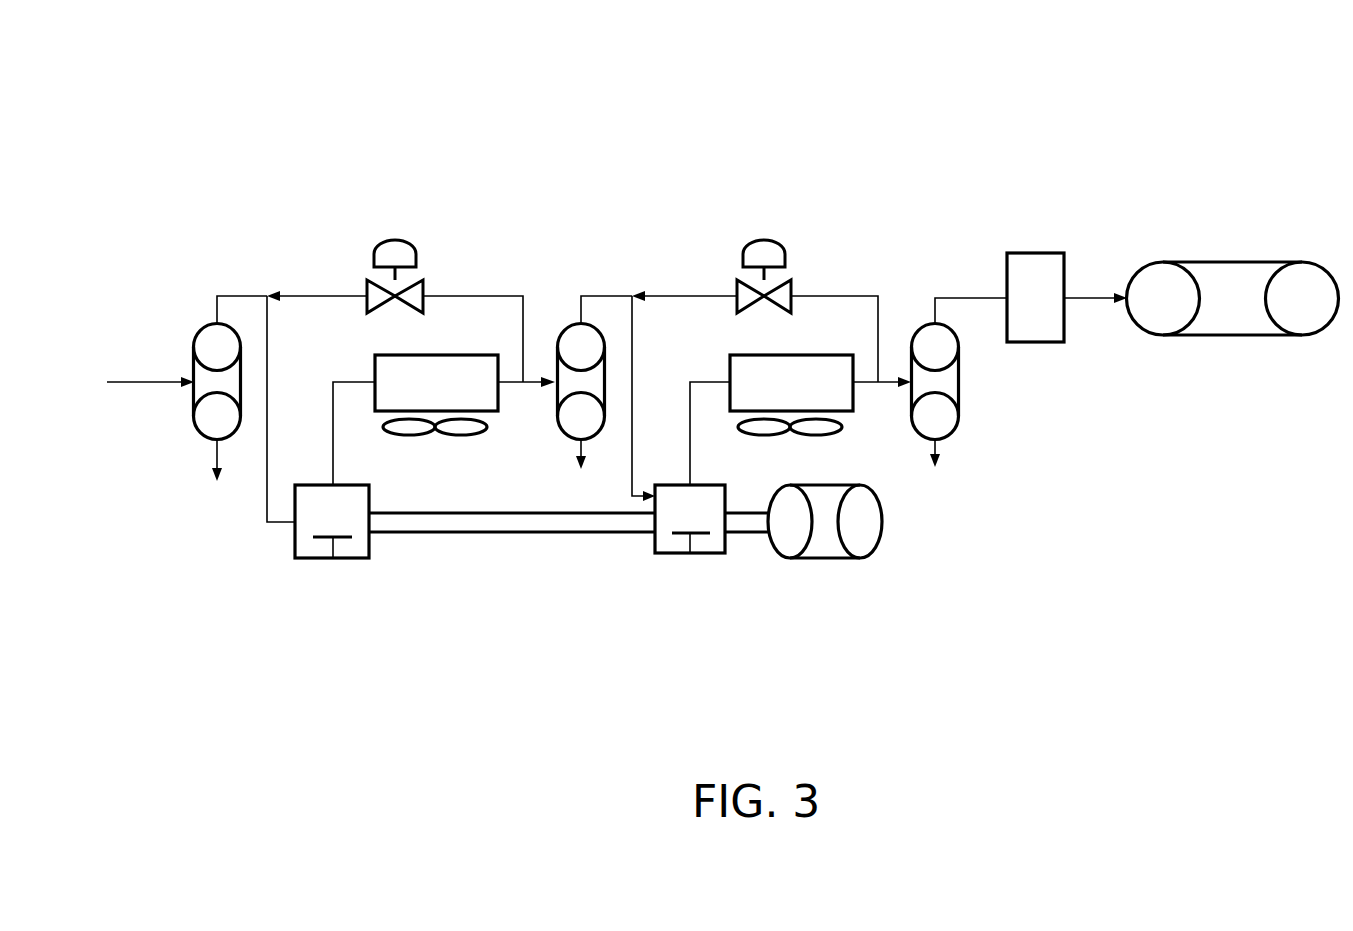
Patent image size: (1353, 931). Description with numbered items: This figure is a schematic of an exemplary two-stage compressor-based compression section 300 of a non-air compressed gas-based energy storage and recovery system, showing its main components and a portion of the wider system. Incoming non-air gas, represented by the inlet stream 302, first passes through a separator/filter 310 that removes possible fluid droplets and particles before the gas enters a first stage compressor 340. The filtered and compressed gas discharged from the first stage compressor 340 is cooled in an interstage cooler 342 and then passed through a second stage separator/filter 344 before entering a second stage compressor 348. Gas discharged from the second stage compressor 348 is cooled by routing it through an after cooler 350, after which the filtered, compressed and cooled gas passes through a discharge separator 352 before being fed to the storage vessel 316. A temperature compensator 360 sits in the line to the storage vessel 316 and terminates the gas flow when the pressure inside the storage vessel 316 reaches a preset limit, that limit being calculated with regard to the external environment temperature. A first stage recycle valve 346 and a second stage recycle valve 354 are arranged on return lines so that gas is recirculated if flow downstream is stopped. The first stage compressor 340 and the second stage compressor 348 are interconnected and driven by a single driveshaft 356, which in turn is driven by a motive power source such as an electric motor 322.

The compression section 300 is at (1104, 92).
The inlet stream 302 is at (140, 382).
The separator/filter 310 is at (193, 397).
The storage vessel 316 is at (1230, 336).
The motive power source 322 is at (878, 549).
The first stage compressor 340 is at (333, 558).
The interstage cooler 342 is at (455, 436).
The second stage separator/filter 344 is at (558, 431).
The first stage recycle valve 346 is at (395, 240).
The second stage compressor 348 is at (690, 553).
The after cooler 350 is at (730, 368).
The discharge separator 352 is at (952, 433).
The second stage recycle valve 354 is at (764, 240).
The driveshaft 356 is at (500, 533).
The temperature compensator 360 is at (1035, 343).